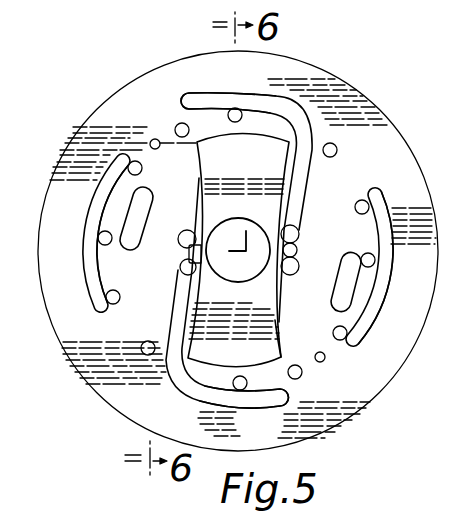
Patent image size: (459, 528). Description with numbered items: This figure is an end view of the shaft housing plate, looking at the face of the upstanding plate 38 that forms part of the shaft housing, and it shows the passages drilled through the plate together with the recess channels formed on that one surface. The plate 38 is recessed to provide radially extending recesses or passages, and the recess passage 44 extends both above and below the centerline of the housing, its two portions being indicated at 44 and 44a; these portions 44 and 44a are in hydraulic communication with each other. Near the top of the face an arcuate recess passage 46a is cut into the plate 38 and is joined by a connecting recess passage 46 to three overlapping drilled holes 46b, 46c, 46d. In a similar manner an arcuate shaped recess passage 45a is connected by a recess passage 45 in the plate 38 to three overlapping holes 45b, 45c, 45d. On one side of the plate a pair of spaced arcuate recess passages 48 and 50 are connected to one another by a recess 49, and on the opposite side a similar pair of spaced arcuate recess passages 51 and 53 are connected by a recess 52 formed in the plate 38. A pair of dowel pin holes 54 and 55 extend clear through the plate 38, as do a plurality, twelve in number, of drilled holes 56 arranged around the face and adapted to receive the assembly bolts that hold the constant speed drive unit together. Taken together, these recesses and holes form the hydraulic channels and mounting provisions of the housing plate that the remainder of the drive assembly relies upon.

The upstanding plate 38 is at (307, 69).
The radially extending recess passage 44 is at (200, 152).
The lower portion of recess passage 44 44a is at (283, 320).
The recess passage 45 is at (173, 296).
The arcuate shaped recess passage 45a is at (260, 398).
The overlapping hole 45b is at (181, 269).
The overlapping hole 45c is at (188, 250).
The overlapping hole 45d is at (187, 230).
The connecting recess passage 46 is at (312, 176).
The arcuate recess passage 46a is at (254, 100).
The overlapping drilled hole 46b is at (300, 232).
The overlapping drilled hole 46c is at (298, 250).
The overlapping drilled hole 46d is at (297, 265).
The arcuate recess passage 48 is at (146, 213).
The connecting recess 49 is at (110, 217).
The arcuate recess passage 50 is at (87, 228).
The arcuate recess passage 51 is at (336, 290).
The connecting recess 52 is at (378, 290).
The arcuate recess passage 53 is at (392, 242).
The dowel pin hole 54 is at (155, 139).
The dowel pin hole 55 is at (323, 362).
The drilled hole 56 is at (238, 122).